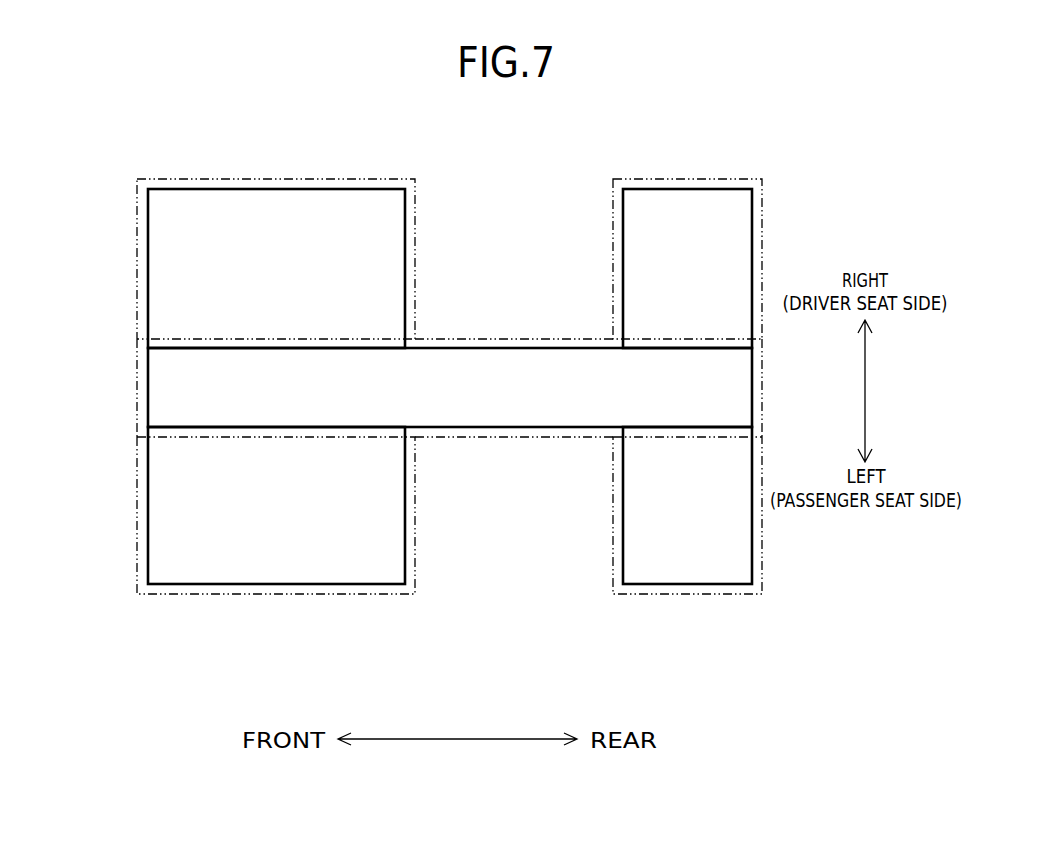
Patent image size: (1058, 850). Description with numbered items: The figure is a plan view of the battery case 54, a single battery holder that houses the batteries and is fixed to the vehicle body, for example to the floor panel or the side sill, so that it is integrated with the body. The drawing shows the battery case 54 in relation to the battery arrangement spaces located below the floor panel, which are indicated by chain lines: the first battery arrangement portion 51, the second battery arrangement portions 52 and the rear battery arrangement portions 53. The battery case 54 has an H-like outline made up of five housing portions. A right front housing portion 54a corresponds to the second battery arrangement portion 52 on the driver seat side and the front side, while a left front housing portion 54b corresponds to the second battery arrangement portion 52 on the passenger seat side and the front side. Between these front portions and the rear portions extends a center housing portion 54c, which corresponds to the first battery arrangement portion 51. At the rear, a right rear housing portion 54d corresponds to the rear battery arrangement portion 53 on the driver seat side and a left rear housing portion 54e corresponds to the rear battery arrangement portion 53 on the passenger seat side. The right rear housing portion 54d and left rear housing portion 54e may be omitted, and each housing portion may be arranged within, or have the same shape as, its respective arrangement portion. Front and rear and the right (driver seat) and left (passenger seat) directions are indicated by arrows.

The first battery arrangement portion 51 is at (517, 339).
The second battery arrangement portion 52 is at (137, 237).
The rear battery arrangement portion 53 is at (762, 228).
The battery case 54 is at (401, 388).
The right front housing portion 54a is at (213, 189).
The left front housing portion 54b is at (213, 584).
The center housing portion 54c is at (483, 427).
The right rear housing portion 54d is at (663, 189).
The left rear housing portion 54e is at (663, 584).